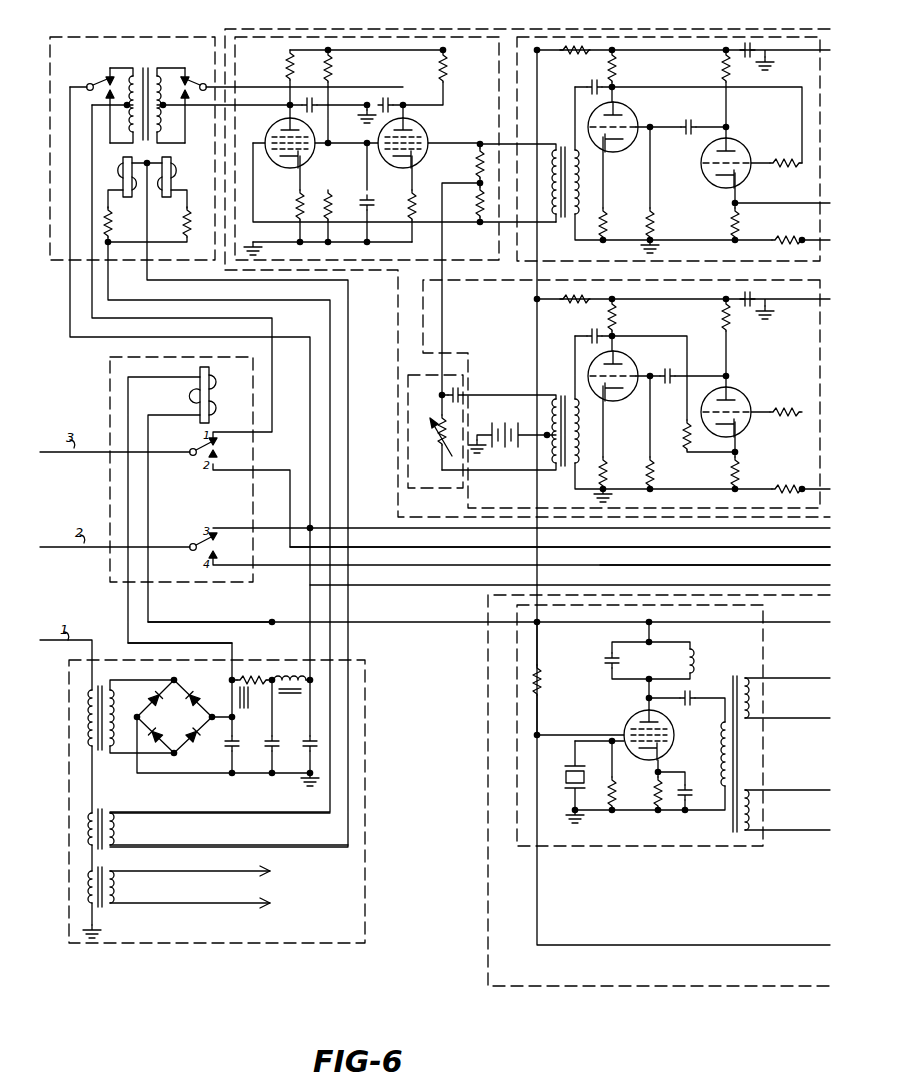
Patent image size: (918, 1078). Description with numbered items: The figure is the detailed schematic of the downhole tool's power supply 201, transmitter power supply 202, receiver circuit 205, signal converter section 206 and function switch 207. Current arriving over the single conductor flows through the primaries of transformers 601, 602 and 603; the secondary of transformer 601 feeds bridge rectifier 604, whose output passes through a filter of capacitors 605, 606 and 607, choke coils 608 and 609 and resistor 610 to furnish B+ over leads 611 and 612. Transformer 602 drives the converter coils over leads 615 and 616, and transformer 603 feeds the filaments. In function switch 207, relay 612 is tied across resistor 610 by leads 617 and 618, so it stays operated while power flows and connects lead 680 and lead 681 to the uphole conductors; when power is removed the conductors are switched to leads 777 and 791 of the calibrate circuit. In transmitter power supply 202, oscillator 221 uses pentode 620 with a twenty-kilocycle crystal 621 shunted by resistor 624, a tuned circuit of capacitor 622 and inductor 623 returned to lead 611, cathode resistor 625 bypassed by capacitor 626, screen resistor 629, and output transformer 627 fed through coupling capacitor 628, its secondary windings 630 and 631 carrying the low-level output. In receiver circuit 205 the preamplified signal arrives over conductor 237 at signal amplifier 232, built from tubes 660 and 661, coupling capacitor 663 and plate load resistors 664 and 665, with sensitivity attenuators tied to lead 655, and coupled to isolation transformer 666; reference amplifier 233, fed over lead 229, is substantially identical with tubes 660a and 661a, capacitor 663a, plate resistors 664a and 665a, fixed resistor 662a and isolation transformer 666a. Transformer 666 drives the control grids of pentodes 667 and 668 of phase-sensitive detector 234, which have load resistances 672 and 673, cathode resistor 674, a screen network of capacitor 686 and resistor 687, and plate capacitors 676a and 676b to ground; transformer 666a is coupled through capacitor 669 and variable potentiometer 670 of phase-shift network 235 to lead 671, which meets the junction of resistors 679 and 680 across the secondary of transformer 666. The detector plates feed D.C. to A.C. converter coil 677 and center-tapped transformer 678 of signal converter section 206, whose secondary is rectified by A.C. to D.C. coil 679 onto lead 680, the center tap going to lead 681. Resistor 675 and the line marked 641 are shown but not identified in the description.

The power supply 201 is at (362, 808).
The transmitter power supply 202 is at (486, 745).
The receiver circuit 205 is at (398, 370).
The signal converter section 206 is at (52, 262).
The function switch 207 is at (108, 390).
The oscillator 221 is at (601, 846).
The lead 229 is at (806, 488).
The signal amplifier 232 is at (581, 262).
The reference amplifier 233 is at (511, 288).
The phase-sensitive detector 234 is at (409, 262).
The phase-shift network 235 is at (452, 490).
The conductor 237 is at (802, 240).
The transformer 601 is at (107, 677).
The transformer 602 is at (104, 804).
The transformer 603 is at (104, 862).
The bridge rectifier 604 is at (176, 726).
The capacitor 605 is at (250, 744).
The capacitor 606 is at (286, 754).
The capacitor 607 is at (304, 734).
The choke coil 608 is at (229, 685).
The choke coil 609 is at (288, 667).
The resistor 610 is at (246, 667).
The lead 611 is at (435, 621).
The relay 612 is at (196, 402).
The lead 615 is at (204, 822).
The lead 616 is at (275, 843).
The lead 617 is at (187, 644).
The lead 618 is at (213, 621).
The pentode 620 is at (630, 720).
The crystal 621 is at (568, 760).
The capacitor 622 is at (598, 672).
The inductor 623 is at (676, 662).
The resistor 624 is at (614, 788).
The cathode resistor 625 is at (658, 800).
The capacitor 626 is at (686, 778).
The transformer 627 is at (720, 680).
The coupling capacitor 628 is at (680, 714).
The resistor 629 is at (542, 688).
The secondary winding 630 is at (754, 698).
The secondary winding 631 is at (754, 809).
The lead 641 is at (387, 526).
The lead 655 is at (784, 87).
The input tube 660 is at (737, 141).
The input tube 660a is at (737, 390).
The output tube 661 is at (620, 114).
The output tube 661a is at (620, 364).
The fixed resistor 662a is at (680, 454).
The coupling capacitor 663 is at (671, 121).
The coupling capacitor 663a is at (664, 394).
The plate load resistor 664 is at (616, 70).
The plate resistor 664a is at (616, 319).
The plate load resistor 665 is at (726, 70).
The plate resistor 665a is at (726, 327).
The isolation transformer 666 is at (554, 144).
The isolation transformer 666a is at (554, 395).
The pentode 667 is at (418, 129).
The pentode 668 is at (273, 132).
The capacitor 669 is at (464, 390).
The variable potentiometer 670 is at (434, 445).
The lead 671 is at (442, 318).
The plate load resistance 672 is at (447, 66).
The plate load resistance 673 is at (280, 77).
The cathode dropping resistor 674 is at (413, 195).
The cathode resistor 675 is at (296, 204).
The capacitor 676a is at (324, 96).
The capacitor 676b is at (392, 84).
The D.C. to A.C. converter coil 677 is at (168, 161).
The transformer 678 is at (142, 66).
The A.C. to D.C. coil 679 is at (123, 159).
The lead 680 is at (70, 322).
The lead 681 is at (118, 320).
The capacitor 686 is at (371, 206).
The resistor 687 is at (334, 206).
The lead 777 is at (748, 549).
The lead 791 is at (785, 568).